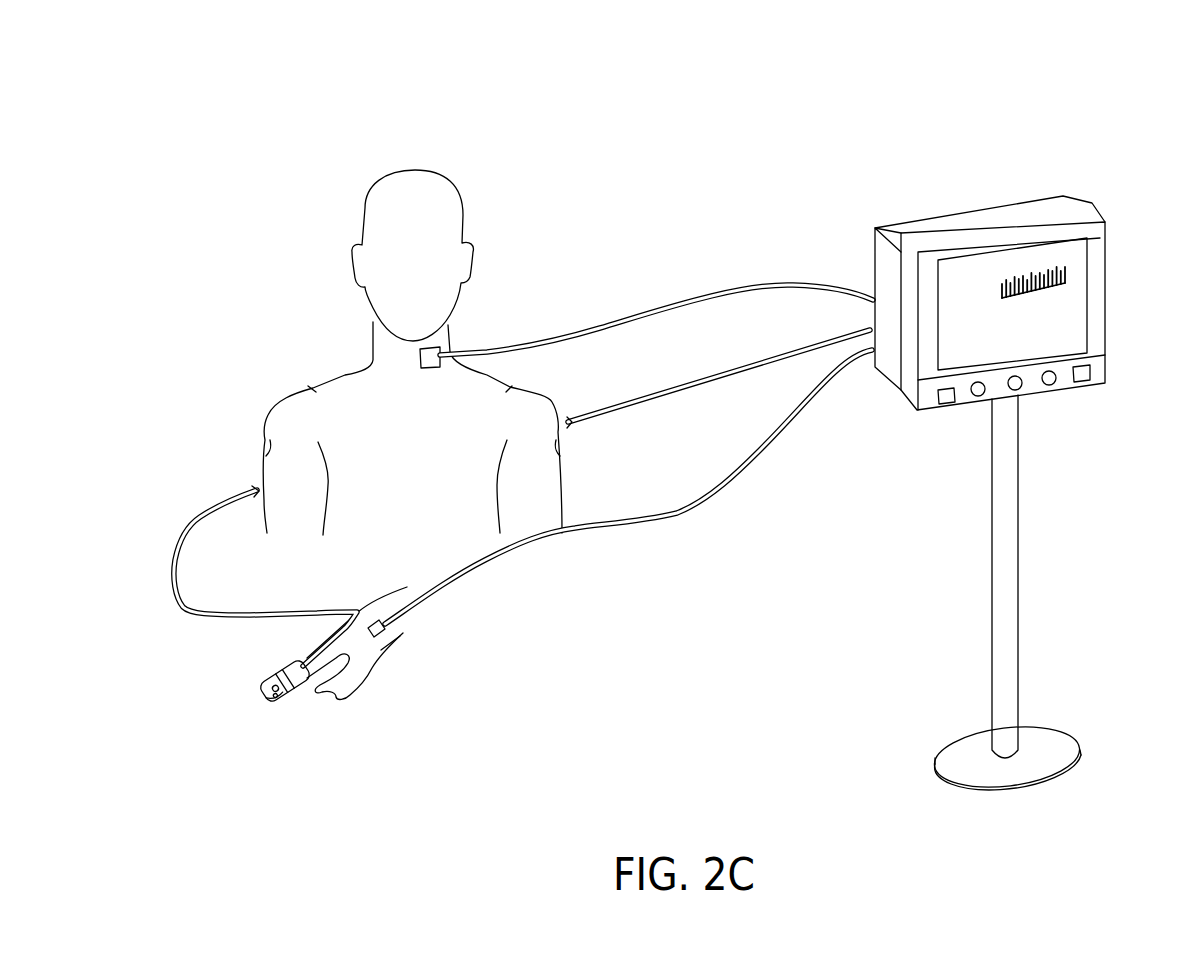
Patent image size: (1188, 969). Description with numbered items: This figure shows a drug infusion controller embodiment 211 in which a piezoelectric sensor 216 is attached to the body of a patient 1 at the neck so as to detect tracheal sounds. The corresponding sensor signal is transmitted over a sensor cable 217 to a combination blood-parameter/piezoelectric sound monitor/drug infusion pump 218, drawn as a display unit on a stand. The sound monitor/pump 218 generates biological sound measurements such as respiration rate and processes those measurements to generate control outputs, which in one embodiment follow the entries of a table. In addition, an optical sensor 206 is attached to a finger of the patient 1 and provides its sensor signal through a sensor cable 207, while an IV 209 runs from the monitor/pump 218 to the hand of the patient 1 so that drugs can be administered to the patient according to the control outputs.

The drug infusion controller embodiment 211 is at (676, 82).
The combination blood-parameter/piezoelectric sound monitor/drug infusion pump 218 is at (1078, 202).
The sensor cable 217 is at (570, 336).
The piezoelectric sensor 216 is at (448, 347).
The IV 209 is at (680, 512).
The sensor cable 207 is at (194, 605).
The optical sensor 206 is at (262, 698).
The patient 1 is at (380, 650).